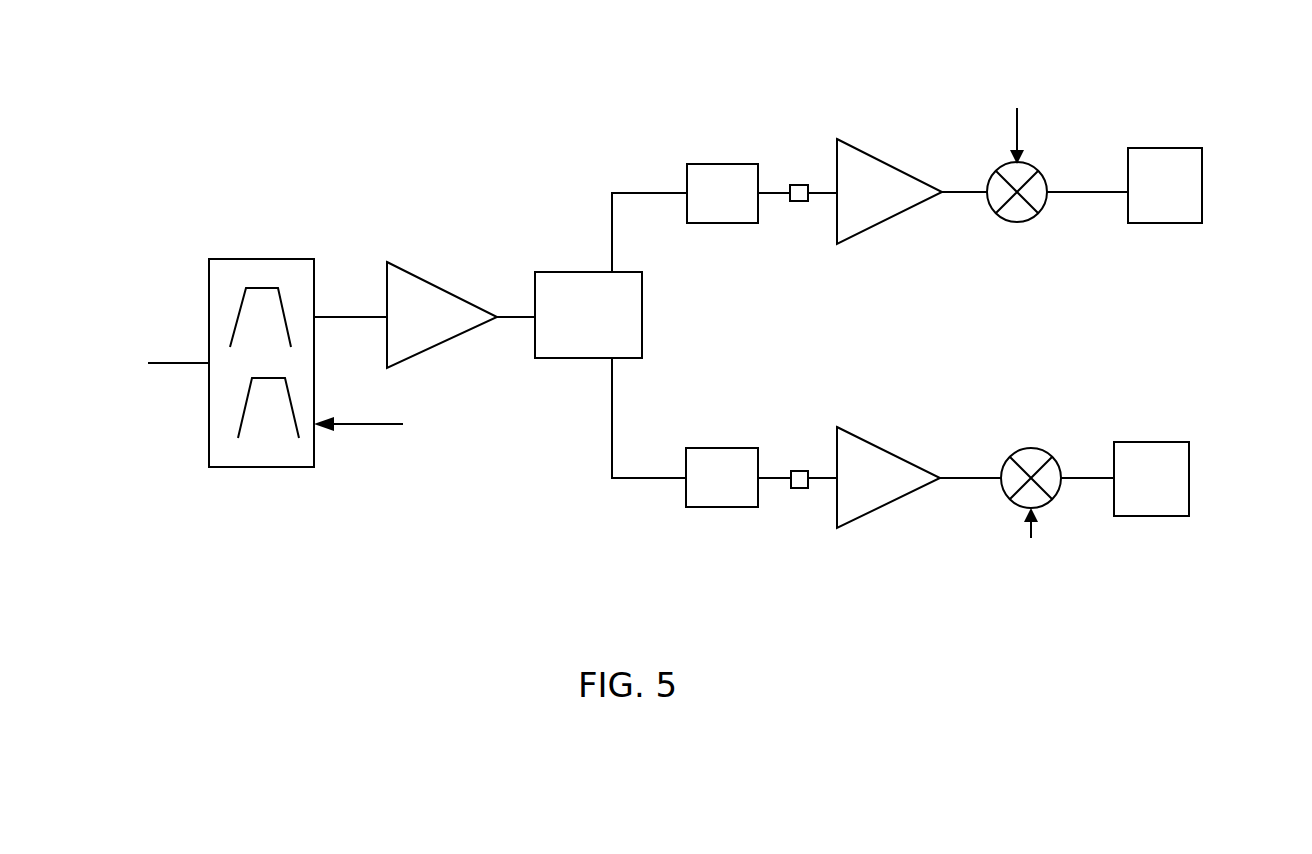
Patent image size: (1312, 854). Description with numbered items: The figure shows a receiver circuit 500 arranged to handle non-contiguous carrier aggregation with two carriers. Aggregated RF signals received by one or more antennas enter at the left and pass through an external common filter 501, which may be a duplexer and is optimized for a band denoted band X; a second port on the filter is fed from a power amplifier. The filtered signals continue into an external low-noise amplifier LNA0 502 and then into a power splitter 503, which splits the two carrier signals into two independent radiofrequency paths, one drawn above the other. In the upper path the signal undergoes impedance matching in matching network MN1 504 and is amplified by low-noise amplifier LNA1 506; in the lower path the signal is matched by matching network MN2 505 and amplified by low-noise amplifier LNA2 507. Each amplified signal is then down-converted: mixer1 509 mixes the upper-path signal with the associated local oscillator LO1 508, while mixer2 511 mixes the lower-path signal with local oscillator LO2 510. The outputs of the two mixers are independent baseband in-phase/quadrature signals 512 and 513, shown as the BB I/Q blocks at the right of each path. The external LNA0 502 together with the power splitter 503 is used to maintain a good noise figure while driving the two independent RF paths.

The receiver circuit 500 is at (487, 104).
The external common filter 501 is at (209, 310).
The external low-noise amplifier LNA0 502 is at (432, 284).
The power splitter 503 is at (543, 271).
The matching network MN1 504 is at (693, 164).
The matching network MN2 505 is at (703, 448).
The low-noise amplifier LNA1 506 is at (888, 165).
The low-noise amplifier LNA2 507 is at (880, 443).
The local oscillator LO1 508 is at (1064, 88).
The mixer1 509 is at (992, 209).
The local oscillator LO2 510 is at (984, 575).
The mixer2 511 is at (1005, 494).
The baseband signal 512 is at (1202, 188).
The baseband signal 513 is at (1189, 483).